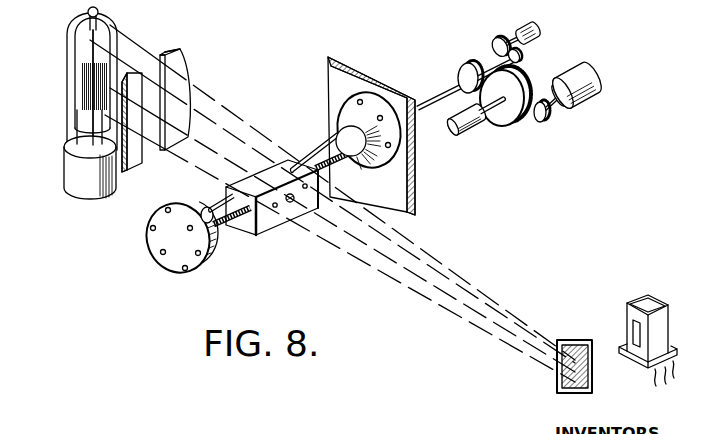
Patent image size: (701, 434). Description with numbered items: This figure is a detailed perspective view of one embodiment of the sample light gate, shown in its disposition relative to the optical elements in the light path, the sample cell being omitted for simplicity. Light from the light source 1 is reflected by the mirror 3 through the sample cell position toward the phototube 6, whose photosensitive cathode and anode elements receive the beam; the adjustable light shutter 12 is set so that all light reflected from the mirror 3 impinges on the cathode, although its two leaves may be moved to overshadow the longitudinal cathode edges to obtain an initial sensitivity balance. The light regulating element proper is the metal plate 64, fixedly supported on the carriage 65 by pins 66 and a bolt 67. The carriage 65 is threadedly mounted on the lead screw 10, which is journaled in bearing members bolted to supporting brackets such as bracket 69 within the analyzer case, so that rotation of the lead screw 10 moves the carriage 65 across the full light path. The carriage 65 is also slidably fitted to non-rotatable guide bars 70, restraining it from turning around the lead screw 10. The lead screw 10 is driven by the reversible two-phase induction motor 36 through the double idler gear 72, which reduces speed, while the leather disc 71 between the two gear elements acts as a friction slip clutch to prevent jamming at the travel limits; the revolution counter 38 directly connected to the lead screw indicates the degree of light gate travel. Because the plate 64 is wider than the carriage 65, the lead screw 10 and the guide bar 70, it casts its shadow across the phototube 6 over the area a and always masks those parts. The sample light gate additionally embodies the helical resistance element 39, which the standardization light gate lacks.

The shadow area a is at (83, 87).
The phototube 6 is at (64, 163).
The adjustable light shutter 12 is at (142, 64).
The guide bar 70 is at (213, 200).
The lead screw 10 is at (228, 224).
The metal plate 64 is at (258, 232).
The bolt 67 is at (291, 203).
The pins 66 is at (305, 184).
The carriage 65 is at (245, 187).
The supporting bracket 69 is at (407, 93).
The revolution counter 38 is at (518, 28).
The leather disc 71 is at (527, 78).
The motor 36 is at (593, 103).
The helical resistance element 39 is at (480, 125).
The double idler gear 72 is at (508, 130).
The mirror 3 is at (570, 340).
The light source 1 is at (648, 295).